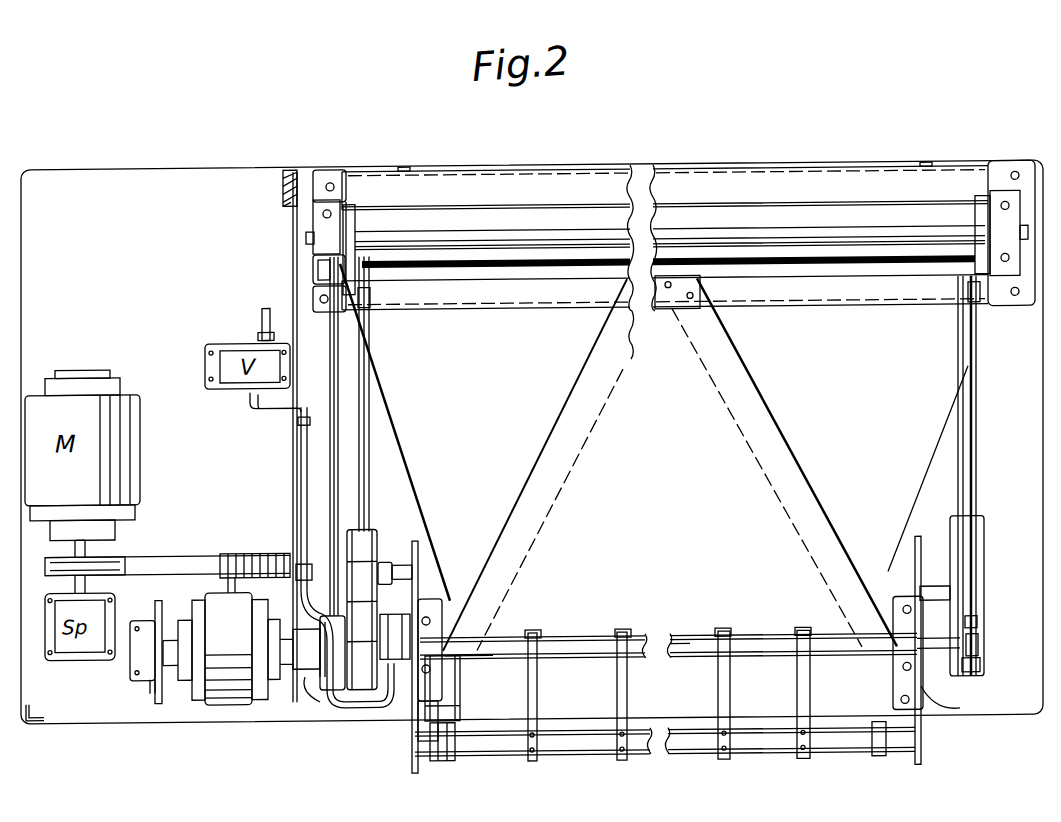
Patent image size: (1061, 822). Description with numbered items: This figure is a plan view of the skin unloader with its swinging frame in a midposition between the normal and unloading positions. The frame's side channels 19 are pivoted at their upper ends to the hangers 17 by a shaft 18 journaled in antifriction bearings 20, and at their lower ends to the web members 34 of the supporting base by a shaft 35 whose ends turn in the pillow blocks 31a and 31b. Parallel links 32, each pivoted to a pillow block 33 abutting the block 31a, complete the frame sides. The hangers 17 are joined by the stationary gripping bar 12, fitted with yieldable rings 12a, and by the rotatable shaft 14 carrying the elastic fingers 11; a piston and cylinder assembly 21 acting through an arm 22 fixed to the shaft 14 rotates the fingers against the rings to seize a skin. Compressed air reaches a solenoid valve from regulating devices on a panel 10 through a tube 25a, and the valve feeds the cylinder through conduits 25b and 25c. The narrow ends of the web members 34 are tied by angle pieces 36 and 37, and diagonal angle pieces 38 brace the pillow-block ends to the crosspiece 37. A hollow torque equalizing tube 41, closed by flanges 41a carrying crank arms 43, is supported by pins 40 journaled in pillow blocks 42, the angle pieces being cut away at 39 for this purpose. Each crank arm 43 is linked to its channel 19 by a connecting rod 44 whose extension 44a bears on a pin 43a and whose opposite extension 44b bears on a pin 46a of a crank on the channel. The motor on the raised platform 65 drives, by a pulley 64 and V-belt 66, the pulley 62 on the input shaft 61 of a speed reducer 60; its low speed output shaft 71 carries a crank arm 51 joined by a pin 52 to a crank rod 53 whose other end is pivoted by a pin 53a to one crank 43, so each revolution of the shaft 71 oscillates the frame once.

The panel 10 is at (283, 190).
The fingers 11 is at (617, 692).
The gripping bar 12 is at (645, 637).
The rings 12a is at (535, 630).
The shaft 14 is at (830, 730).
The hangers 17 is at (412, 744).
The shaft 18 is at (676, 640).
The channels 19 is at (410, 740).
The antifriction bearings 20 is at (435, 598).
The piston and cylinder assembly 21 is at (462, 690).
The arm 22 is at (457, 732).
The tube 25a is at (260, 326).
The conduit 25b is at (301, 440).
The conduit 25c is at (309, 610).
The pillow block 31a is at (425, 560).
The pillow block 31b is at (480, 630).
The parallel links 32 is at (390, 598).
The pillow block 33 is at (360, 545).
The web members 34 is at (312, 168).
The shaft 35 is at (978, 625).
The angle piece 36 is at (498, 178).
The angle piece 37 is at (505, 312).
The diagonally extending angle pieces 38 is at (555, 440).
The cut away 39 is at (352, 195).
The pin 40 is at (313, 232).
The hollow tube 41 is at (719, 220).
The flanges 41a is at (375, 205).
The pillow block 42 is at (310, 240).
The crank arms 43 is at (368, 236).
The pin 43a is at (375, 272).
The connecting rod 44 is at (370, 418).
The extension member 44a is at (368, 298).
The extension 44b is at (385, 660).
The pin 46a is at (980, 668).
The crank arm 51 is at (300, 668).
The pin 52 is at (325, 705).
The crank rod 53 is at (330, 375).
The pin 53a is at (313, 267).
The speed reducer 60 is at (211, 649).
The input shaft 61 is at (228, 585).
The pulley 62 is at (270, 551).
The pulley 64 is at (112, 553).
The raised platform 65 is at (532, 442).
The V-belt drive 66 is at (140, 553).
The low speed output shaft 71 is at (172, 700).